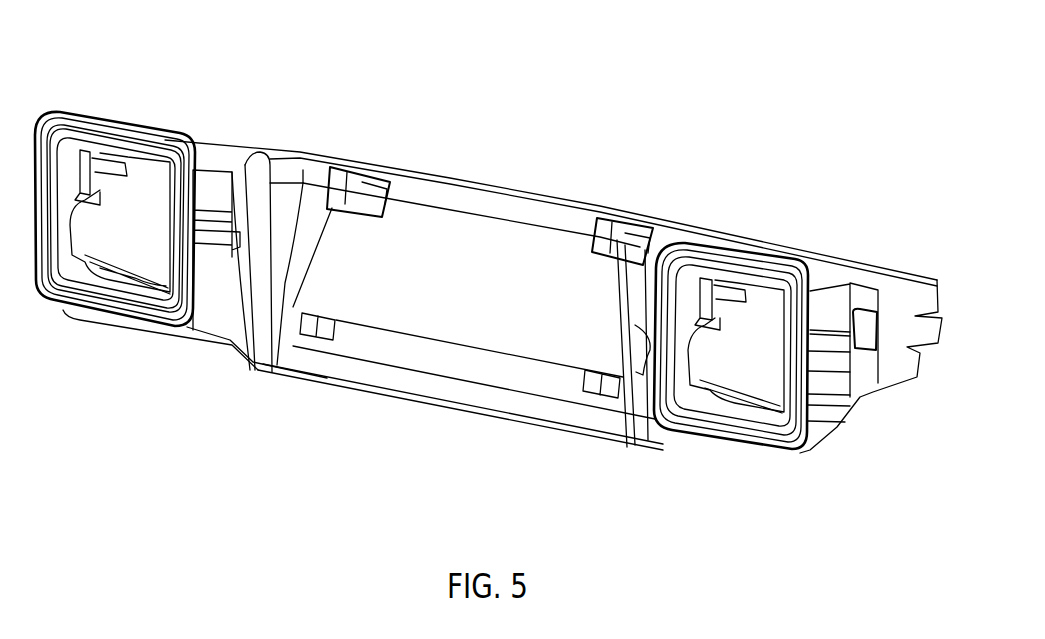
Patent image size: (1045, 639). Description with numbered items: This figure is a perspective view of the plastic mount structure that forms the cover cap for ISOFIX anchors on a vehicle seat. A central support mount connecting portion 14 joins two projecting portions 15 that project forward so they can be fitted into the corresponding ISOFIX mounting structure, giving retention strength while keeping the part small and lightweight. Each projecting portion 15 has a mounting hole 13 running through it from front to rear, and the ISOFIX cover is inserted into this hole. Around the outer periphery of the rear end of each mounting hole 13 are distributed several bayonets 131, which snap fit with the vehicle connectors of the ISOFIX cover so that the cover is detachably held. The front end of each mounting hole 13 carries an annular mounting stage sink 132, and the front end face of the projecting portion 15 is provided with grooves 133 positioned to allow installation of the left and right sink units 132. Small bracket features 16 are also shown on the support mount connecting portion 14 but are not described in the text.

The mounting hole 13 is at (163, 130).
The support mount connecting portion 14 is at (460, 240).
The projecting portion 15 is at (210, 197).
The mounting bracket 16 is at (613, 243).
The bayonet 131 is at (743, 243).
The annular mounting stage sink 132 is at (133, 120).
The groove 133 is at (620, 353).